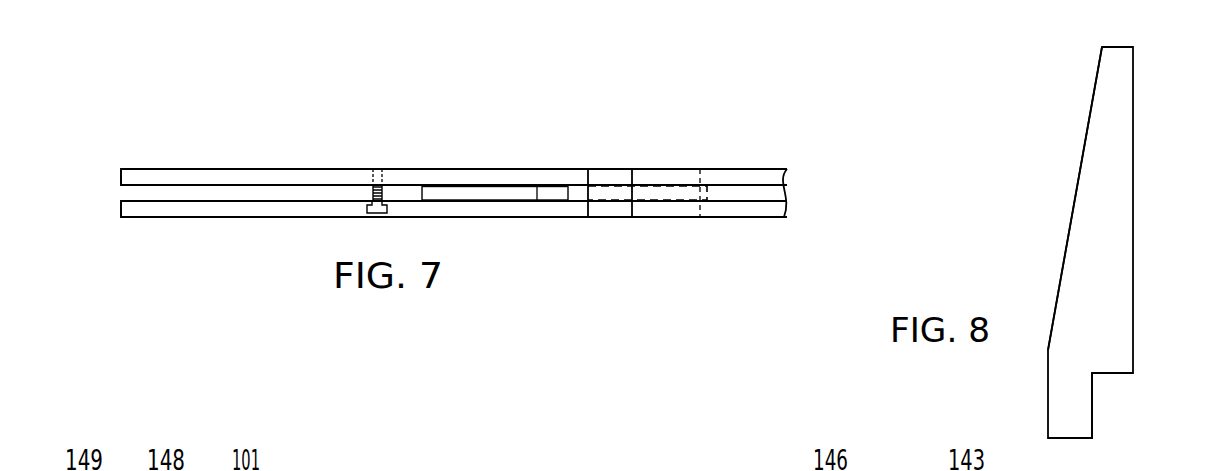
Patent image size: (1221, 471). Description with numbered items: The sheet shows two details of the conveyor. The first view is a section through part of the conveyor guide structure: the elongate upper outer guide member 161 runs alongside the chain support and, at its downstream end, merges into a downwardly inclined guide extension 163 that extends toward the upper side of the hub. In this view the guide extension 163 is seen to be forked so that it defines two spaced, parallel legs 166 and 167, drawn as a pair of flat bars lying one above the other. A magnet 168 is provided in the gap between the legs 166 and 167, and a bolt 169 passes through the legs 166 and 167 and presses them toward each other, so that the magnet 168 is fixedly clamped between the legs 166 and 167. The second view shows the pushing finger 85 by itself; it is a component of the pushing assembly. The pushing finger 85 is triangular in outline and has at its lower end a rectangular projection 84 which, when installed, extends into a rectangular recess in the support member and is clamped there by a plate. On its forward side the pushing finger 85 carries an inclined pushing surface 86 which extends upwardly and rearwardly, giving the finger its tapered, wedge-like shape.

In FIG. 7, the upper outer guide member 161 is at (737, 197).
In FIG. 7, the downwardly inclined guide extension 163 is at (224, 225).
In FIG. 7, the leg 166 is at (162, 210).
In FIG. 7, the leg 167 is at (223, 177).
In FIG. 7, the magnet 168 is at (463, 193).
In FIG. 7, the bolt 169 is at (386, 197).
In FIG. 8, the rectangular projection 84 is at (1070, 400).
In FIG. 8, the pushing finger 85 is at (1112, 195).
In FIG. 8, the inclined pushing surface 86 is at (1082, 153).